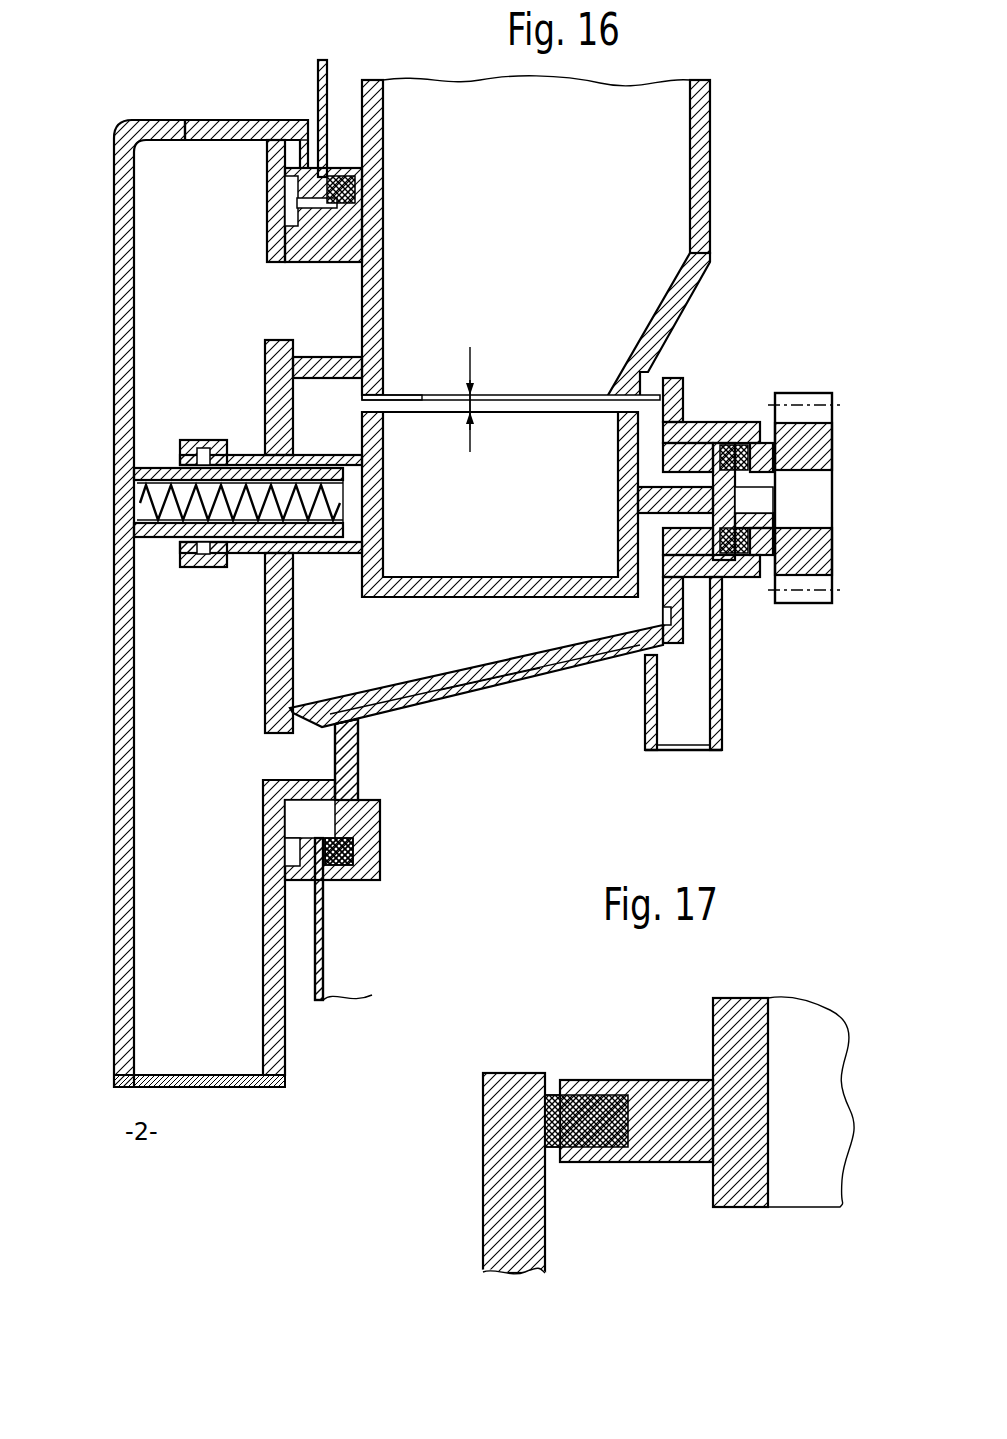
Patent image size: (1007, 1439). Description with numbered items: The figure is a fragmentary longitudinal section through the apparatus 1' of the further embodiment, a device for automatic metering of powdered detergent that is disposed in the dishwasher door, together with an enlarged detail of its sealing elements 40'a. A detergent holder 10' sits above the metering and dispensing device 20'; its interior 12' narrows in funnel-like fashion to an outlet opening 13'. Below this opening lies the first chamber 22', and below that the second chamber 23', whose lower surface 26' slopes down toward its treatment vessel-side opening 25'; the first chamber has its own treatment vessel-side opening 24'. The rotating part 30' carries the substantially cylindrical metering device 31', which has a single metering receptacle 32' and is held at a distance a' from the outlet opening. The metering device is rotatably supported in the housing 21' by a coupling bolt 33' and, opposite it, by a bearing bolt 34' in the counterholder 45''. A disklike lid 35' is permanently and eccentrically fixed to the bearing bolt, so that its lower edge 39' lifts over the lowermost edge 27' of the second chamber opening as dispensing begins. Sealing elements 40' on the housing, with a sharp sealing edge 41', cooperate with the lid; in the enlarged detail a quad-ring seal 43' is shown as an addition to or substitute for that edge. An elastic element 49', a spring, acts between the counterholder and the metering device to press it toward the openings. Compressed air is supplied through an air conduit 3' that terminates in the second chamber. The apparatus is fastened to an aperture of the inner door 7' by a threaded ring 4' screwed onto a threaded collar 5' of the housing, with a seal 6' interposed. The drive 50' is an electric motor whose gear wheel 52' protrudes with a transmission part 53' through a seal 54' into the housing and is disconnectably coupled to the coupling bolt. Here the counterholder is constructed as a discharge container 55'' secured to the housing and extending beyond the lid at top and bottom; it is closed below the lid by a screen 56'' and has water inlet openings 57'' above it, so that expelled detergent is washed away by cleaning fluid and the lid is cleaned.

In FIG. 16, the apparatus 1' is at (558, 216).
In FIG. 16, the air conduit 3' is at (683, 663).
In FIG. 16, the threaded ring 4' is at (249, 201).
In FIG. 16, the threaded collar 5' is at (363, 215).
In FIG. 16, the seal 6' is at (383, 517).
In FIG. 16, the inner door 7' is at (361, 519).
In FIG. 16, the detergent holder 10' is at (744, 166).
In FIG. 16, the interior 12' is at (703, 320).
In FIG. 16, the outlet opening 13' is at (494, 395).
In FIG. 16, the metering and dispensing device 20' is at (730, 359).
In FIG. 16, the housing 21' is at (699, 491).
In FIG. 17, the housing 21' is at (783, 1095).
In FIG. 16, the first chamber 22' is at (711, 475).
In FIG. 16, the second chamber 23' is at (485, 693).
In FIG. 16, the treatment vessel-side opening 24' is at (406, 368).
In FIG. 16, the treatment vessel-side opening 25' is at (271, 519).
In FIG. 16, the lower surface 26' is at (490, 703).
In FIG. 16, the lowermost edge 27' is at (325, 725).
In FIG. 16, the rotating part 30' is at (476, 683).
In FIG. 16, the metering device 31' is at (500, 527).
In FIG. 16, the metering receptacle 32' is at (511, 386).
In FIG. 16, the coupling bolt 33' is at (715, 438).
In FIG. 16, the bearing bolt 34' is at (197, 526).
In FIG. 16, the lid 35' is at (253, 536).
In FIG. 17, the lid 35' is at (486, 1176).
In FIG. 16, the lower edge 39' is at (251, 715).
In FIG. 16, the sealing elements 40' is at (253, 735).
In FIG. 17, the sealing elements 40'a is at (629, 1072).
In FIG. 16, the sealing edge 41' is at (363, 687).
In FIG. 17, the seal 43' is at (589, 1092).
In FIG. 16, the counterholder 45'' is at (246, 113).
In FIG. 16, the elastic element 49' is at (188, 498).
In FIG. 16, the drive 50' is at (810, 458).
In FIG. 16, the gear wheel 52' is at (804, 501).
In FIG. 16, the transmission part 53' is at (815, 507).
In FIG. 16, the seal 54' is at (750, 534).
In FIG. 16, the discharge container 55'' is at (246, 99).
In FIG. 16, the screen 56'' is at (199, 1110).
In FIG. 16, the water inlet openings 57'' is at (150, 572).
In FIG. 16, the distance a' is at (495, 420).